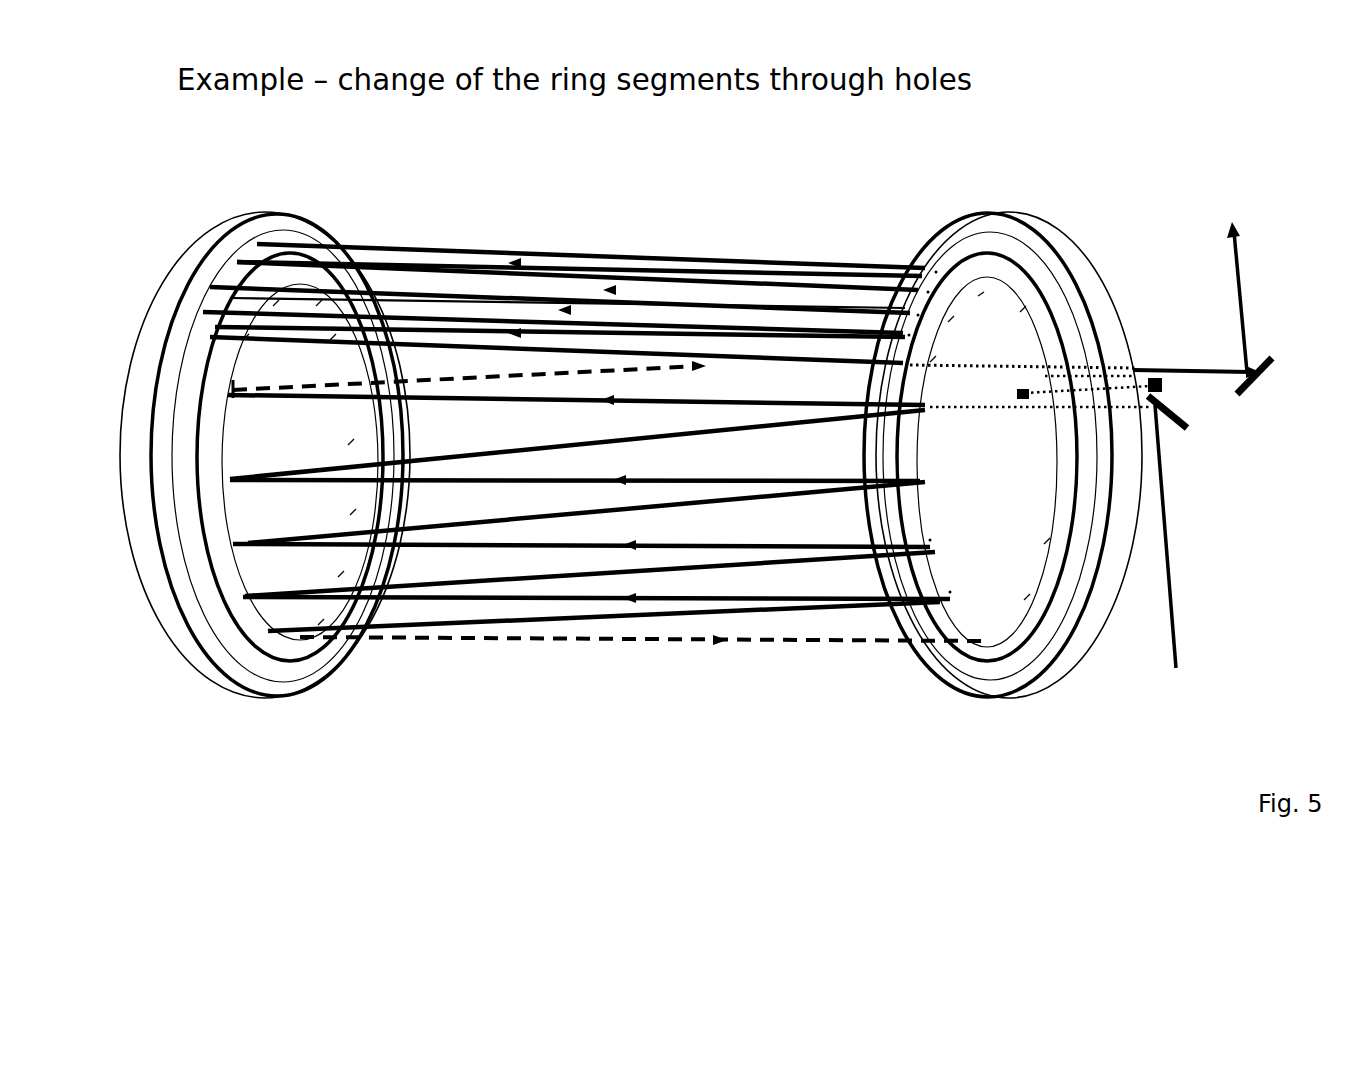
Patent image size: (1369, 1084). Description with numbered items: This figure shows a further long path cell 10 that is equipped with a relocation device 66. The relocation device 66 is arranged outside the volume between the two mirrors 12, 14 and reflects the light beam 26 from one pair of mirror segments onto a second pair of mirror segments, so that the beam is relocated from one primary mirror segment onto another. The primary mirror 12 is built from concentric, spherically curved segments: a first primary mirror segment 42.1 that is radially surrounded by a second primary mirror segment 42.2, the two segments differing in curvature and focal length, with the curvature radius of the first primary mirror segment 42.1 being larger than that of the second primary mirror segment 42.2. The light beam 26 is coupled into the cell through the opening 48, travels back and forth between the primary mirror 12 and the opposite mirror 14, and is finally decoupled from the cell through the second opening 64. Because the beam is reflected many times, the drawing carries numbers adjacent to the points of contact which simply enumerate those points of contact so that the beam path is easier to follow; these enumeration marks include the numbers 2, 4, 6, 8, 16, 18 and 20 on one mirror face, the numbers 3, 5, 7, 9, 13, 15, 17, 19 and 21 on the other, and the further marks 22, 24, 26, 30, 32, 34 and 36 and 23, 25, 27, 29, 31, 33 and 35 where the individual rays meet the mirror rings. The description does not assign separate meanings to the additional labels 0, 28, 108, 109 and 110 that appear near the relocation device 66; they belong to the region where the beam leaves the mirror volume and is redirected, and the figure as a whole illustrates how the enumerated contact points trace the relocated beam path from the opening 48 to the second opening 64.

The long path cell 10 is at (1166, 160).
The primary mirror 12 is at (277, 212).
The mirror 14 is at (967, 217).
The second opening 64 is at (884, 348).
The relocation device 66 is at (1178, 268).
The deflection mirror 110 is at (1254, 310).
The coupling element 28 is at (1104, 385).
The reference mirror 0 is at (1167, 420).
The light beam 26 is at (1178, 570).
The opening 48 is at (912, 418).
The reference beam path 108 is at (576, 396).
The beam path 109 is at (539, 342).
The first primary mirror segment 42.1 is at (227, 583).
The second primary mirror segment 42.2 is at (190, 577).
The hole 35 is at (581, 249).
The hole 33 is at (572, 272).
The hole 31 is at (556, 293).
The hole 29 is at (548, 317).
The hole 27 is at (570, 444).
The hole 25 is at (576, 516).
The hole 23 is at (591, 577).
The hole 21 is at (601, 616).
The hole 36 is at (934, 266).
The hole 34 is at (925, 288).
The hole 32 is at (914, 310).
The hole 30 is at (904, 329).
The hole 24 is at (924, 533).
The hole 22 is at (953, 586).
The hole 20 is at (646, 633).
The hole 2 is at (932, 355).
The hole 4 is at (949, 318).
The hole 6 is at (979, 292).
The hole 8 is at (1022, 308).
The hole 16 is at (1047, 541).
The hole 18 is at (1027, 598).
The hole 3 is at (245, 334).
The hole 5 is at (276, 302).
The hole 7 is at (318, 301).
The hole 9 is at (332, 334).
The hole 13 is at (350, 440).
The hole 15 is at (352, 510).
The hole 17 is at (340, 572).
The hole 19 is at (318, 622).